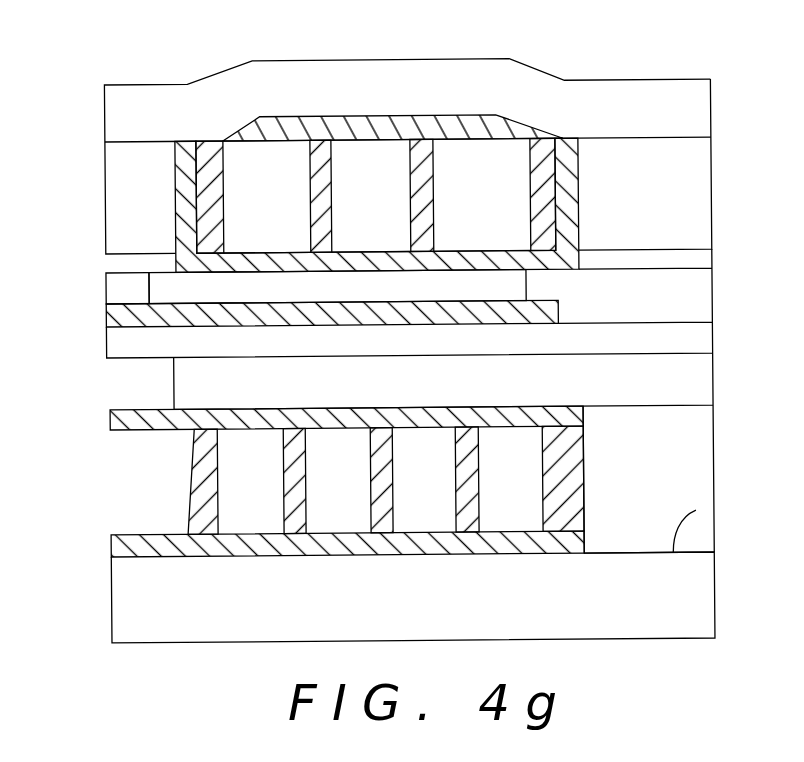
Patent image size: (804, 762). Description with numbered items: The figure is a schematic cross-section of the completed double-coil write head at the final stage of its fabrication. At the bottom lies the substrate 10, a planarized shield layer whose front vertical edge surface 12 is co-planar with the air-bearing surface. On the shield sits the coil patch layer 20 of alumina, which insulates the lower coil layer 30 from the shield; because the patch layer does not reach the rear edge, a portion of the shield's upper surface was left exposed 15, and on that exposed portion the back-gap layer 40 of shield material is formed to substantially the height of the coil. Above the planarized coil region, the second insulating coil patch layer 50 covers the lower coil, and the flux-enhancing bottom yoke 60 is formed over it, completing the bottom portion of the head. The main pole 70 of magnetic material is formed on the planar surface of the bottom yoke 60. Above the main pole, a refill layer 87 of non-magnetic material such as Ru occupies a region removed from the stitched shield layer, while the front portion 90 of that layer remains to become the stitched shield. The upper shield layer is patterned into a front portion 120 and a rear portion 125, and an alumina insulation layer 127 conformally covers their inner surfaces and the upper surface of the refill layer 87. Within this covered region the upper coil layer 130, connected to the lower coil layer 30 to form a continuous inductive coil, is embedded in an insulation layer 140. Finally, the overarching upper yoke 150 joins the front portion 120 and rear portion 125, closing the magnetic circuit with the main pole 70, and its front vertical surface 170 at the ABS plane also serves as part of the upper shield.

The substrate 10 is at (700, 598).
The front vertical edge surface 12 is at (110, 586).
The exposed upper surface portion 15 is at (693, 511).
The coil patch layer 20 is at (120, 553).
The lower coil layer 30 is at (250, 484).
The back-gap layer 40 is at (697, 473).
The second insulating coil patch layer 50 is at (110, 418).
The flux-enhancing bottom yoke 60 is at (690, 373).
The main pole 70 is at (690, 342).
The refill layer 87 is at (500, 287).
The front portion of stitched shield layer 90 is at (122, 290).
The front portion of upper shield layer 120 is at (137, 190).
The rear portion of upper shield layer 125 is at (688, 190).
The alumina insulation layer 127 is at (186, 150).
The upper coil layer 130 is at (260, 163).
The insulation layer 140 is at (318, 130).
The overarching upper yoke 150 is at (440, 78).
The front vertical surface of yoking layer 170 is at (107, 117).